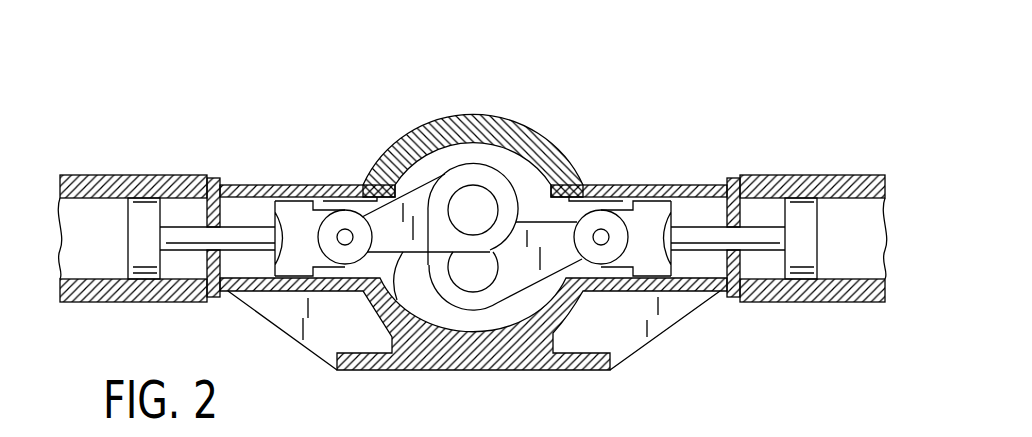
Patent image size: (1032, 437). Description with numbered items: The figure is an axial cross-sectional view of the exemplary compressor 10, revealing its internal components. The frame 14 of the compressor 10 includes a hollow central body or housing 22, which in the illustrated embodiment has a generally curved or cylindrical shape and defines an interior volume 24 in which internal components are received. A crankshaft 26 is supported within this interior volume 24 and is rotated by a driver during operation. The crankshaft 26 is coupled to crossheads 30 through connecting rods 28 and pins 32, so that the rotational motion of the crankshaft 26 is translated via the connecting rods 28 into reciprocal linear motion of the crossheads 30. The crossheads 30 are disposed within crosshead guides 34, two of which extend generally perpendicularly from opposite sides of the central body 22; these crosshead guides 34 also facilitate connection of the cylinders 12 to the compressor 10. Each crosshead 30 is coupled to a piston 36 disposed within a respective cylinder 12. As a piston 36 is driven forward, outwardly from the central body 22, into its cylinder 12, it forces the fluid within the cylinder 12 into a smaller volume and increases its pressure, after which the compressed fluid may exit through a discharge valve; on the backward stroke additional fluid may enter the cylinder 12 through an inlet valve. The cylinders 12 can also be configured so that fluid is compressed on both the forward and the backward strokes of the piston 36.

The compressor 10 is at (544, 78).
The cylinder 12 is at (164, 174).
The frame 14 is at (523, 133).
The central body 22 is at (413, 145).
The interior volume 24 is at (469, 163).
The crankshaft 26 is at (472, 209).
The connecting rod 28 is at (540, 237).
The crosshead 30 is at (292, 200).
The pin 32 is at (345, 236).
The crosshead guide 34 is at (240, 292).
The piston 36 is at (143, 233).